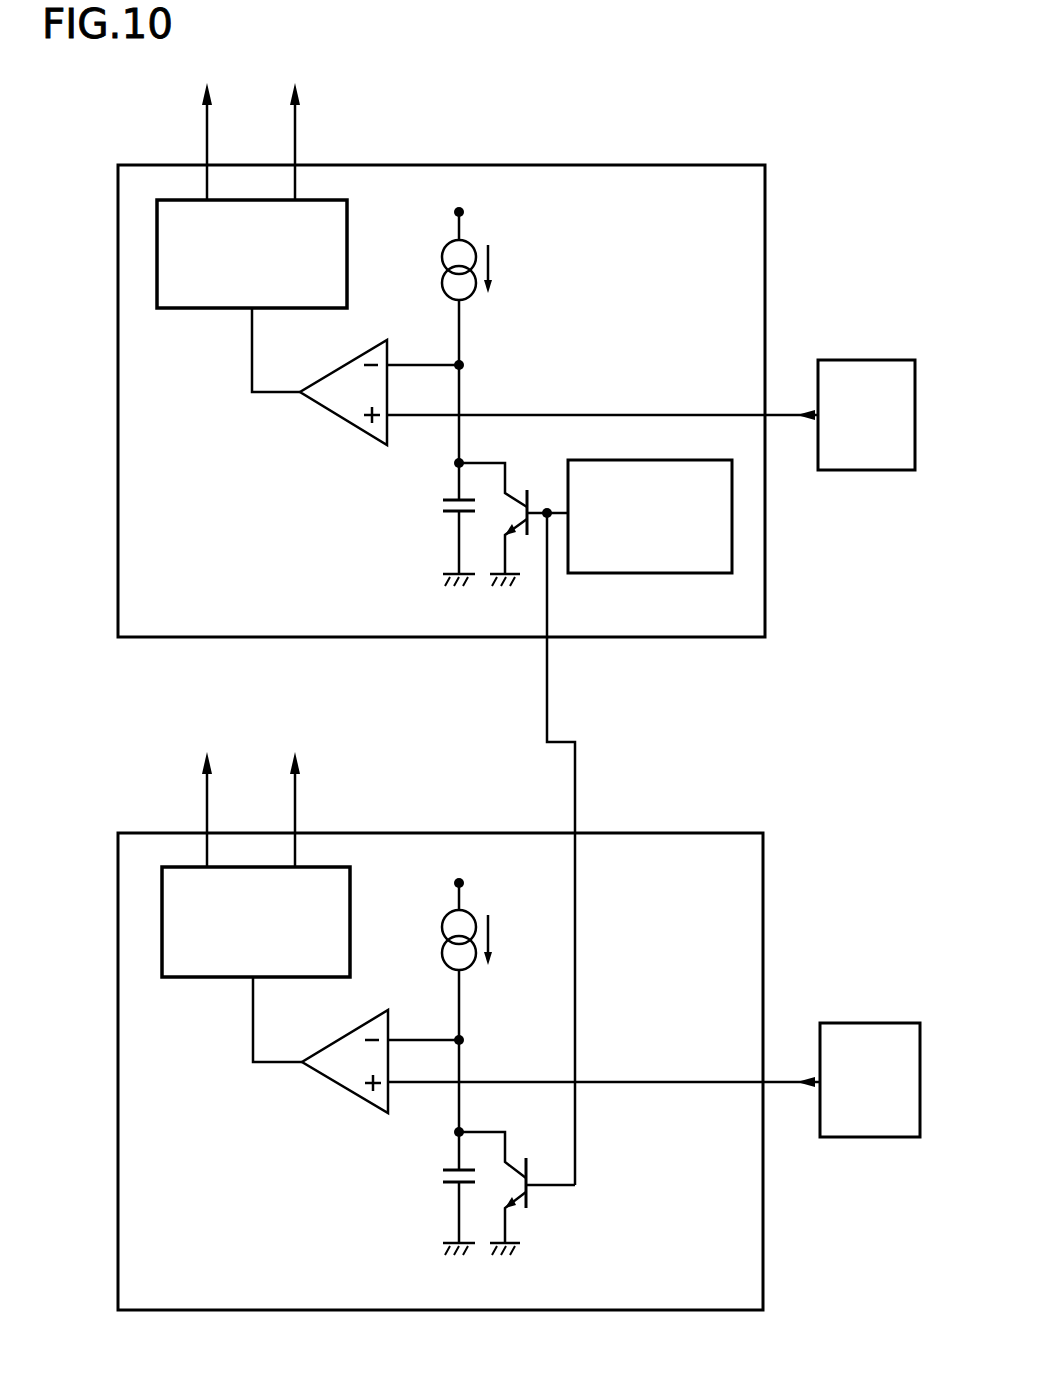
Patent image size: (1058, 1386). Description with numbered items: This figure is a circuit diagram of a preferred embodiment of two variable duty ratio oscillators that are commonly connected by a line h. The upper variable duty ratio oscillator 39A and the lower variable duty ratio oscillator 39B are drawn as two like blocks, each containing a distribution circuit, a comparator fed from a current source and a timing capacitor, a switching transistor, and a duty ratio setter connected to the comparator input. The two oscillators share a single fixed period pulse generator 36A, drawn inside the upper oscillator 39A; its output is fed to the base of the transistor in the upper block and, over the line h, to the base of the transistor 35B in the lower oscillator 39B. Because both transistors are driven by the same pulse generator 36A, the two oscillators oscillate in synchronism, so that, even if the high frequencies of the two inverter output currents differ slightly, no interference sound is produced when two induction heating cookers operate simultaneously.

The variable duty ratio oscillator 39A is at (516, 634).
The fixed period pulse generator 36A is at (673, 460).
The variable duty ratio oscillator 39B is at (519, 1051).
The transistor 35B is at (528, 1200).